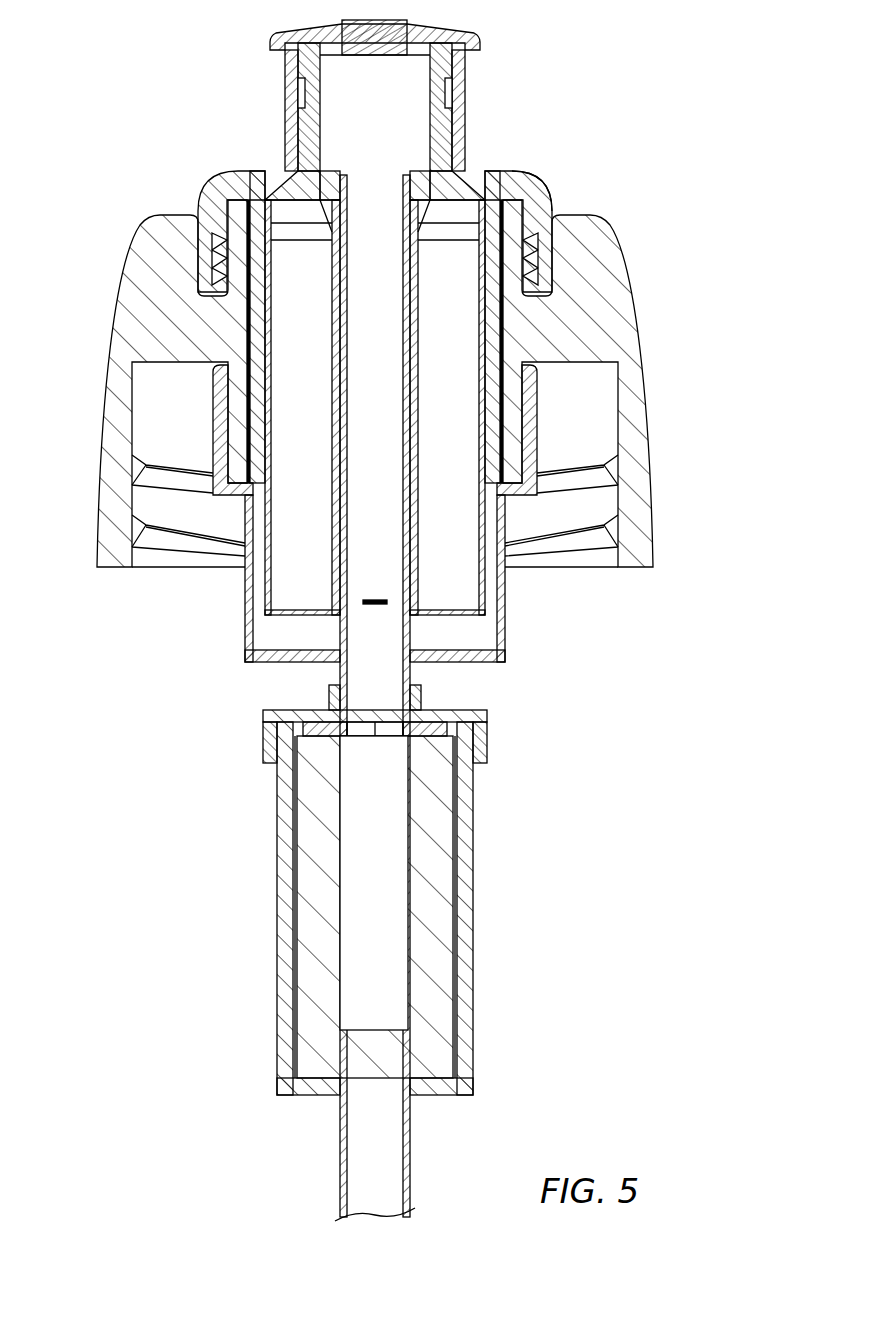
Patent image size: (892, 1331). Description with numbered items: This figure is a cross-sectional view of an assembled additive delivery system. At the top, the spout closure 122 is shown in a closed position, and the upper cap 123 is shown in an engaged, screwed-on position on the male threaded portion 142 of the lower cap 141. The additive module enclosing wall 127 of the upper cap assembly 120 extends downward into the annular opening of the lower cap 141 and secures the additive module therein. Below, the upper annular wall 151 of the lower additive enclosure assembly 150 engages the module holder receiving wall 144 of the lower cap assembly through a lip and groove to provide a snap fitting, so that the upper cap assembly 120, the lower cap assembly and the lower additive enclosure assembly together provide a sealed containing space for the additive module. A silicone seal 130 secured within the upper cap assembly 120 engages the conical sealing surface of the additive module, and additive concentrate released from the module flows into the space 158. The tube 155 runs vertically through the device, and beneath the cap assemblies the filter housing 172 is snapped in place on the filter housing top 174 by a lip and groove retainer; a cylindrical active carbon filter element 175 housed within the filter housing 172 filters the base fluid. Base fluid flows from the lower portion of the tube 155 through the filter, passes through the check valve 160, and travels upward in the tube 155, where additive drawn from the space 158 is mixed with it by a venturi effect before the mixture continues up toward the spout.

The upper cap assembly 120 is at (215, 185).
The spout closure 122 is at (478, 40).
The upper cap 123 is at (548, 182).
The additive module enclosing wall 127 is at (258, 330).
The silicone seal 130 is at (463, 165).
The lower cap 141 is at (650, 320).
The male threaded portion 142 is at (555, 225).
The module holder receiving wall 144 is at (508, 408).
The lower additive enclosure assembly 150 is at (505, 648).
The upper annular wall 151 is at (560, 450).
The tube 155 is at (410, 670).
The space 158 is at (480, 628).
The check valve 160 is at (376, 737).
The filter housing 172 is at (470, 890).
The filter housing top 174 is at (482, 752).
The active carbon filter element 175 is at (435, 987).